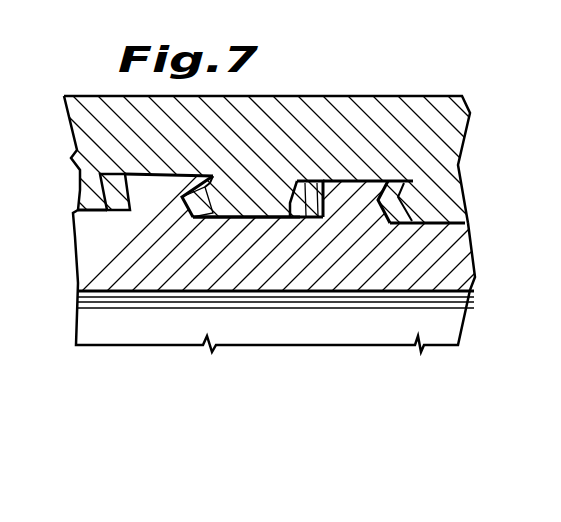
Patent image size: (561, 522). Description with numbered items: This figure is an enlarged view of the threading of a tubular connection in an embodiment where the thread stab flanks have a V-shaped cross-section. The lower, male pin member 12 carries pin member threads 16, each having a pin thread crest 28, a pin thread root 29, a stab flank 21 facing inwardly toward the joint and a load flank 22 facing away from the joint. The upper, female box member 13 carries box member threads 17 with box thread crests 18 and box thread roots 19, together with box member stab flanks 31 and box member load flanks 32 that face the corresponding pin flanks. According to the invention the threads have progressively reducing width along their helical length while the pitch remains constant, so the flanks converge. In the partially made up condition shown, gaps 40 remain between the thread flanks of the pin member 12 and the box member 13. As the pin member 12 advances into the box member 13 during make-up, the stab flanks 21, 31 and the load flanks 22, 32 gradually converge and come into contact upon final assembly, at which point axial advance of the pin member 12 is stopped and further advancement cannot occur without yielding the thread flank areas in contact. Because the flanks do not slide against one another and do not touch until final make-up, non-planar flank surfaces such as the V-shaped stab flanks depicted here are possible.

The pin member 12 is at (307, 282).
The box member 13 is at (318, 108).
The pin member threads 16 is at (376, 190).
The box member threads 17 is at (265, 203).
The box thread crests 18 is at (243, 213).
The box thread roots 19 is at (209, 177).
The pin stab flanks 21 is at (406, 192).
The pin load flanks 22 is at (323, 219).
The pin thread crests 28 is at (340, 184).
The pin thread roots 29 is at (405, 224).
The box member stab flanks 31 is at (240, 219).
The box member load flanks 32 is at (305, 218).
The gaps 40 is at (120, 211).